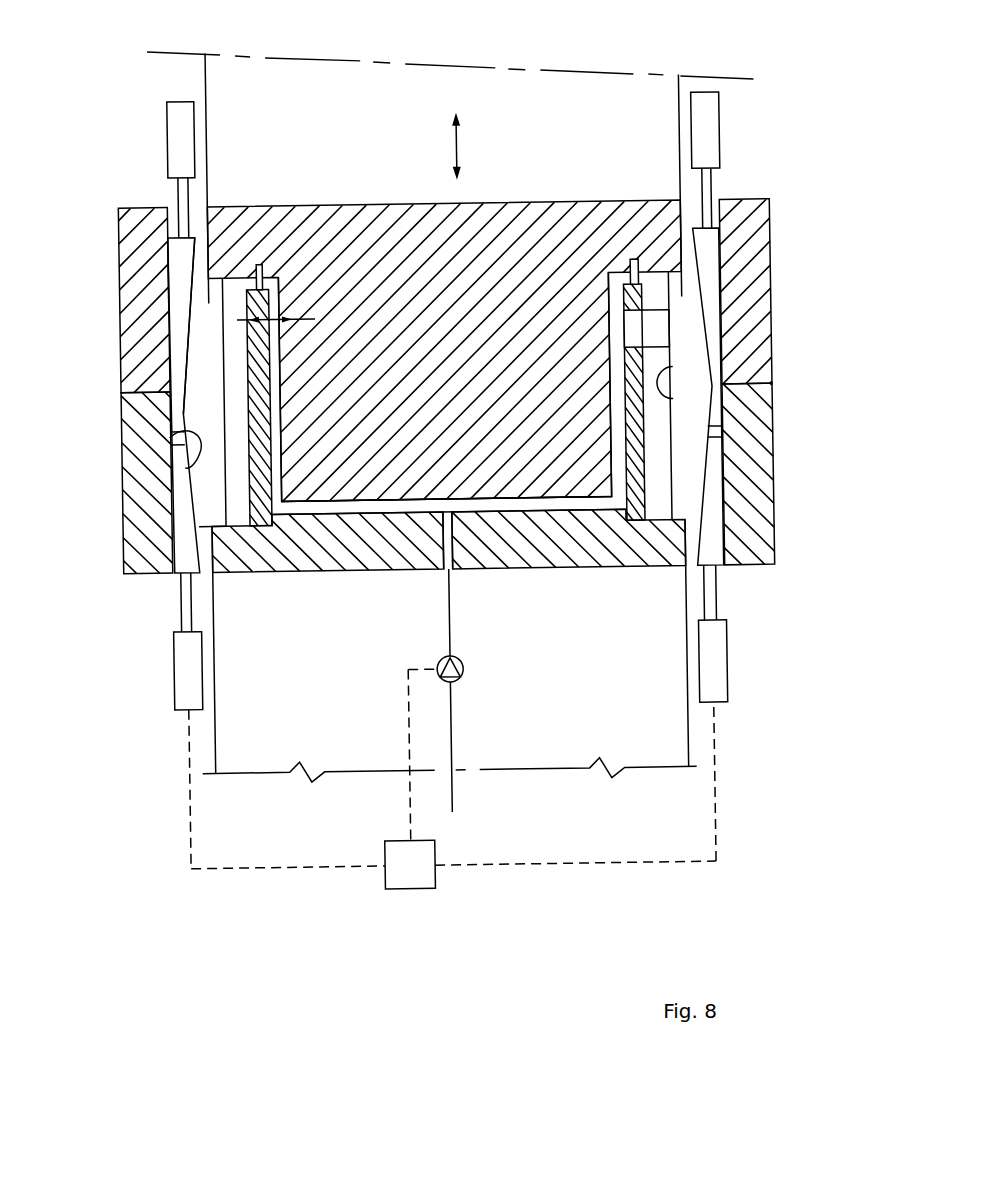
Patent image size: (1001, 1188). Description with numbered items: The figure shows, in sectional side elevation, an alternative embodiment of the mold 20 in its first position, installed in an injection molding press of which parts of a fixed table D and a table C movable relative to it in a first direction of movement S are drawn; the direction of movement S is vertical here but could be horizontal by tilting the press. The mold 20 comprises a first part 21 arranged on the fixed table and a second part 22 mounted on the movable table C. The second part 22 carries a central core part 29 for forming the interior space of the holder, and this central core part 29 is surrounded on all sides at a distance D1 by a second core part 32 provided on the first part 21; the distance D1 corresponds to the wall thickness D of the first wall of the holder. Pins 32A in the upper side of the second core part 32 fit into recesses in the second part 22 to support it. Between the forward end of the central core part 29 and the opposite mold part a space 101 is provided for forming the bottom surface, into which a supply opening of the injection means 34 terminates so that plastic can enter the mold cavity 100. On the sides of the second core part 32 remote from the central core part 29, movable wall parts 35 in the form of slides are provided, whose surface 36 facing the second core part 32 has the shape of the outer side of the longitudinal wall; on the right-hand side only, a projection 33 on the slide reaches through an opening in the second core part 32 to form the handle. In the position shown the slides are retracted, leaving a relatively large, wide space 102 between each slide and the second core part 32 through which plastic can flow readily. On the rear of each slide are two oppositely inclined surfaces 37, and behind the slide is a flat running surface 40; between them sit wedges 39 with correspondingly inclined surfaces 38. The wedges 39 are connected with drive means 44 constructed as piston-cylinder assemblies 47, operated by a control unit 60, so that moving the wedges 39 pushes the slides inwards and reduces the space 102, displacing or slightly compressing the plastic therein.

The mold 20 is at (281, 911).
The first part 21 is at (758, 498).
The second part 22 is at (754, 235).
The central core part 29 is at (582, 467).
The second core part 32 is at (257, 480).
The pins 32A is at (636, 265).
The projection 33 is at (656, 333).
The injection means 34 is at (456, 680).
The movable wall part 35 is at (203, 358).
The surface 36 is at (214, 409).
The inclined surfaces 37 is at (169, 434).
The inclined surfaces 38 is at (184, 320).
The wedges 39 is at (180, 249).
The running surface 40 is at (153, 279).
The drive means 44 is at (143, 706).
The piston-cylinder assemblies 47 is at (179, 123).
The control unit 60 is at (402, 875).
The mold cavity 100 is at (328, 520).
The space 101 is at (523, 504).
The space 102 is at (239, 291).
The movable table C is at (518, 99).
The wall thickness D is at (539, 740).
The distance D1 is at (317, 317).
The first direction of movement S is at (460, 145).